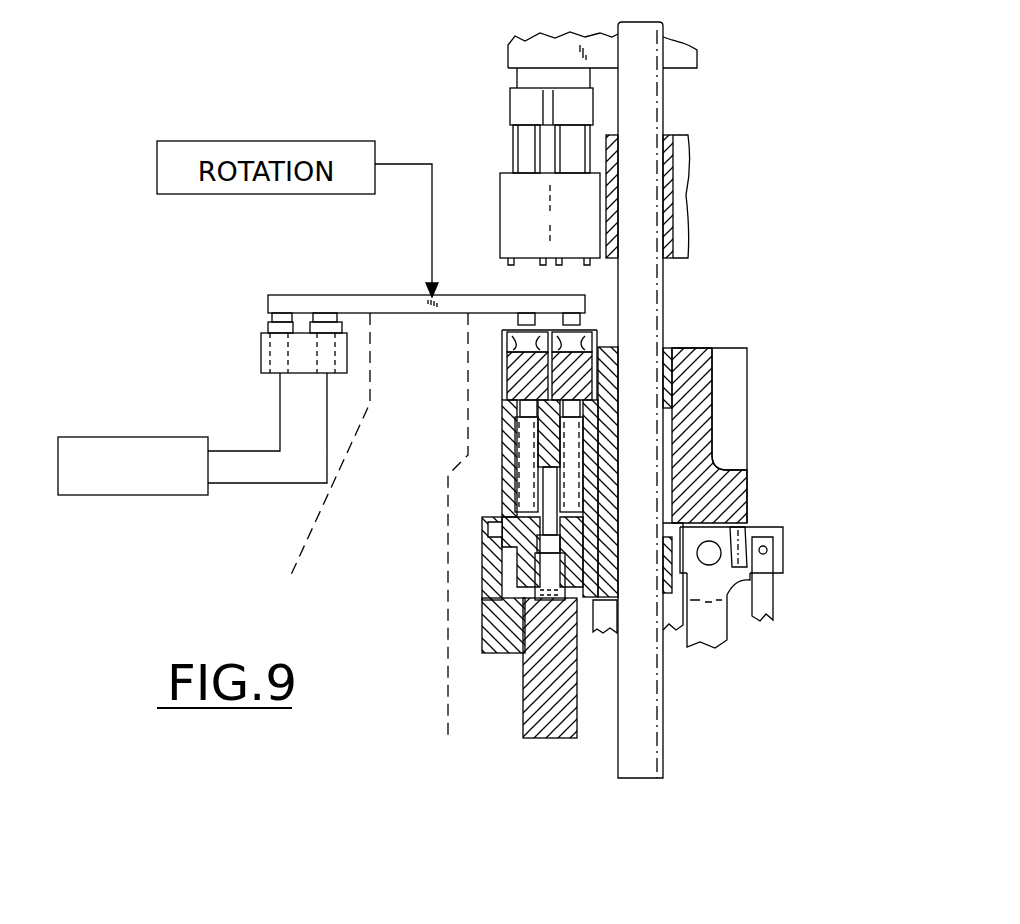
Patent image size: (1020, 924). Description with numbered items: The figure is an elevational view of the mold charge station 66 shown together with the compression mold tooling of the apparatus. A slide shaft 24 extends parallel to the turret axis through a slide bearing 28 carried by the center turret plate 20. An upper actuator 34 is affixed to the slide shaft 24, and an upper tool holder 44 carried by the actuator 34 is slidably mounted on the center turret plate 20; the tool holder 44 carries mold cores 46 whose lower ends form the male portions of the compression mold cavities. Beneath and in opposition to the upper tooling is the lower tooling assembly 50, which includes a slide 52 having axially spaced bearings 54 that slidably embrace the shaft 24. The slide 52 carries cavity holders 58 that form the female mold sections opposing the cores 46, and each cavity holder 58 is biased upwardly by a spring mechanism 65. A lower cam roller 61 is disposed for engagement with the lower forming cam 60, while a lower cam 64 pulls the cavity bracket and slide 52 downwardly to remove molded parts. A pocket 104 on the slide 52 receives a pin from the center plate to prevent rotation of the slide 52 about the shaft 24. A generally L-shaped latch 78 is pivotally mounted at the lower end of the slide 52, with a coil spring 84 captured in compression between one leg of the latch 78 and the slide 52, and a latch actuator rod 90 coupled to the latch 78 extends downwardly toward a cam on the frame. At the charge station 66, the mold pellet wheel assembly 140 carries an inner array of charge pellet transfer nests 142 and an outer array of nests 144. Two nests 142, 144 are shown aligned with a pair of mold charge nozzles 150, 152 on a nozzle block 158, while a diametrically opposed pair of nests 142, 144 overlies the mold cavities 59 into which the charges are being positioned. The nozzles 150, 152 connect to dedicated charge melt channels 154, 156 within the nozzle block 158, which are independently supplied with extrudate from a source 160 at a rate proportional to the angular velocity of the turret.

The center turret plate 20 is at (677, 160).
The slide shaft 24 is at (657, 100).
The slide bearing 28 is at (668, 203).
The upper actuator 34 is at (672, 62).
The upper tool holder 44 is at (502, 188).
The mold core 46 is at (573, 120).
The lower tooling assembly 50 is at (490, 458).
The slide 52 is at (703, 378).
The bearing 54 is at (680, 350).
The cavity holder 58 is at (520, 397).
The mold cavity 59 is at (520, 363).
The lower forming cam 60 is at (538, 683).
The lower cam roller 61 is at (547, 600).
The lower cam 64 is at (483, 605).
The spring mechanism 65 is at (517, 490).
The mold charge station 66 is at (184, 280).
The latch 78 is at (783, 533).
The coil spring 84 is at (747, 532).
The latch actuator rod 90 is at (767, 590).
The pocket 104 is at (732, 467).
The mold pellet wheel assembly 140 is at (395, 297).
The inner charge pellet transfer nest 142 is at (327, 317).
The outer charge pellet transfer nest 144 is at (277, 317).
The mold charge nozzle 150 is at (343, 333).
The mold charge nozzle 152 is at (268, 328).
The charge melt channel 154 is at (342, 368).
The charge melt channel 156 is at (263, 367).
The nozzle block 158 is at (252, 353).
The source 160 is at (165, 497).